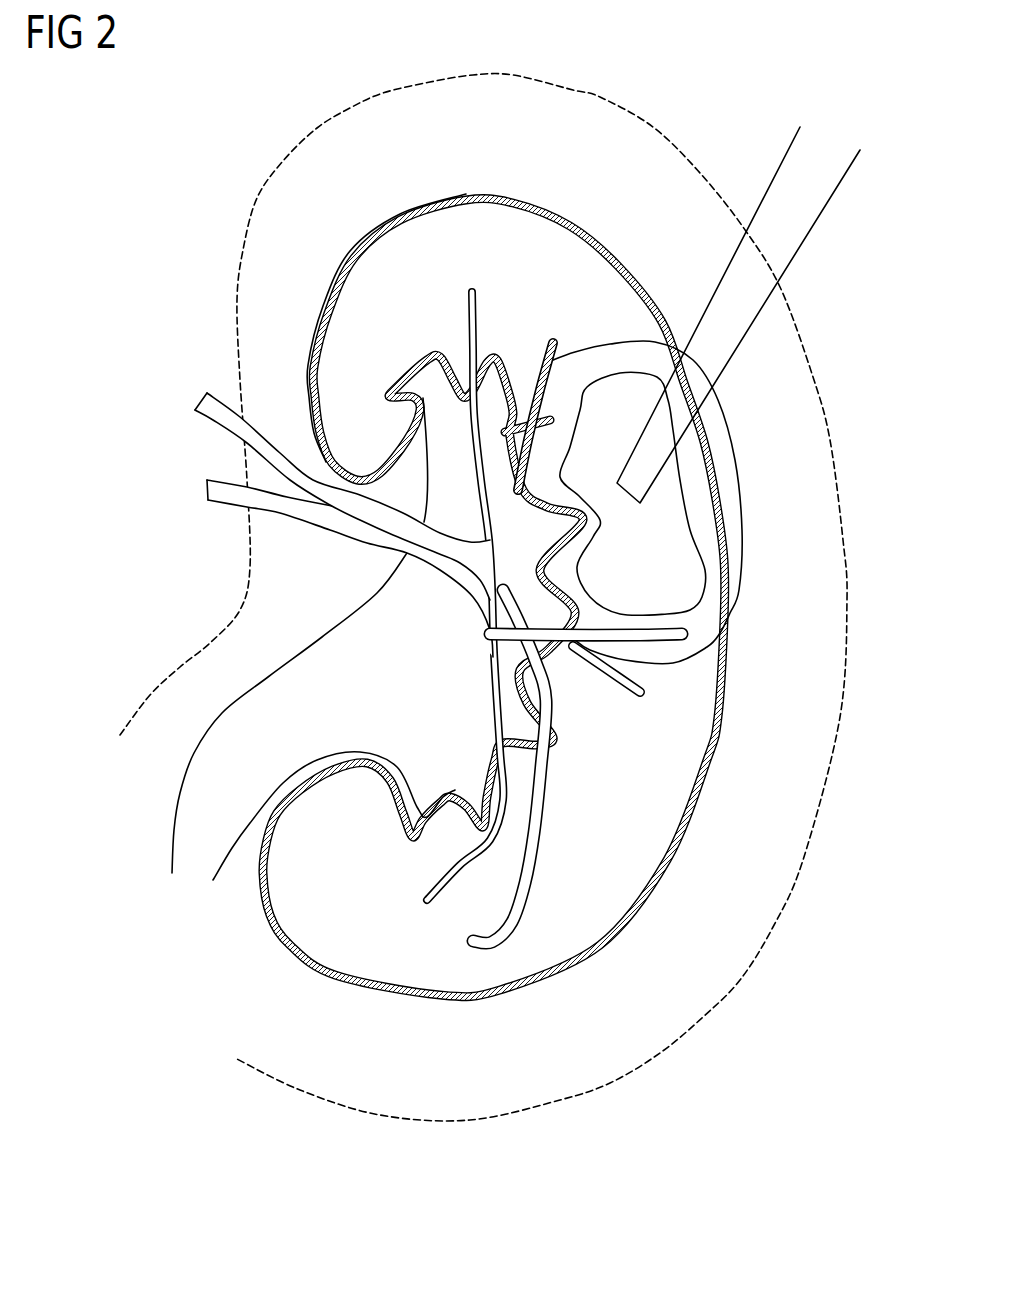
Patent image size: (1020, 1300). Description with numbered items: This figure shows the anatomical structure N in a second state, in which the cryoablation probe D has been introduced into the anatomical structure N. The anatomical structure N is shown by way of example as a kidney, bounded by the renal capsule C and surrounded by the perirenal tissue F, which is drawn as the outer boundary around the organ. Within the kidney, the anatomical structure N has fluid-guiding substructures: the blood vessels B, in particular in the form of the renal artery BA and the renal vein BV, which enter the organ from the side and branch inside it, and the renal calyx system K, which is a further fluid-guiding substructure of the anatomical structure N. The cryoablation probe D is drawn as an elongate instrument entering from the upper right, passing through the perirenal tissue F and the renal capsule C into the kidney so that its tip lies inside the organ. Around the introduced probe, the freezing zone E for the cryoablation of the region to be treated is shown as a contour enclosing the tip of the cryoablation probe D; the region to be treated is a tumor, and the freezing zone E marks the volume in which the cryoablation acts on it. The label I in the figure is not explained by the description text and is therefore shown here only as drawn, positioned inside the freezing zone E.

The anatomical structure N is at (466, 528).
The cryoablation probe D is at (810, 200).
The blood vessels B is at (392, 539).
The renal artery BA is at (204, 404).
The renal vein BV is at (208, 490).
The freezing zone E is at (738, 500).
The perirenal tissue F is at (828, 578).
The lesion I is at (638, 565).
The renal capsule C is at (728, 673).
The renal calyx system K is at (200, 830).